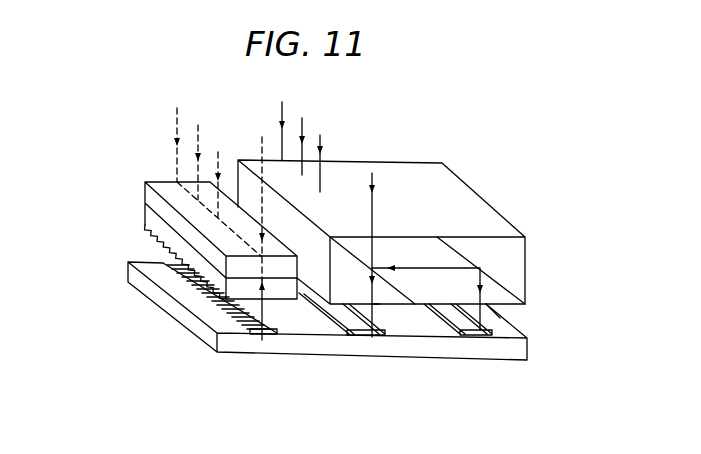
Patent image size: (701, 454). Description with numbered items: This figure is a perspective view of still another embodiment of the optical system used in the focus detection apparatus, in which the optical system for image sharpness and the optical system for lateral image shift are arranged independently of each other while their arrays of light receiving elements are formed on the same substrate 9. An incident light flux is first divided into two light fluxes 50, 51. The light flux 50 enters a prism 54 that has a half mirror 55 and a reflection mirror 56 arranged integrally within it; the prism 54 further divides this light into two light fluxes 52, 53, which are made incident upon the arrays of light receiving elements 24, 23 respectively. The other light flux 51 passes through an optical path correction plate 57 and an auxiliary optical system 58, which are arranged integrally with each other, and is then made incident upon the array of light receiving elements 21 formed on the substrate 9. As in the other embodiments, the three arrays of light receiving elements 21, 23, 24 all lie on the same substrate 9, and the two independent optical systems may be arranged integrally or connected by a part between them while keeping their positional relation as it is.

The substrate 9 is at (527, 347).
The array of light receiving elements 21 is at (263, 333).
The array of light receiving elements 23 is at (484, 337).
The array of light receiving elements 24 is at (372, 337).
The light flux 50 is at (320, 138).
The light flux 51 is at (198, 135).
The light flux 52 is at (373, 306).
The light flux 53 is at (497, 318).
The prism 54 is at (527, 237).
The half mirror 55 is at (364, 262).
The reflection mirror 56 is at (503, 294).
The optical path correction plate 57 is at (145, 193).
The auxiliary optical system 58 is at (145, 226).